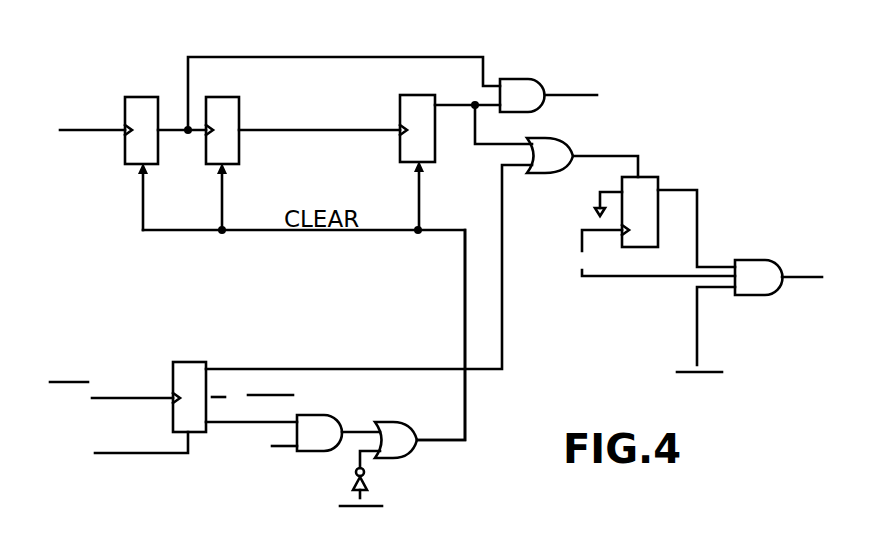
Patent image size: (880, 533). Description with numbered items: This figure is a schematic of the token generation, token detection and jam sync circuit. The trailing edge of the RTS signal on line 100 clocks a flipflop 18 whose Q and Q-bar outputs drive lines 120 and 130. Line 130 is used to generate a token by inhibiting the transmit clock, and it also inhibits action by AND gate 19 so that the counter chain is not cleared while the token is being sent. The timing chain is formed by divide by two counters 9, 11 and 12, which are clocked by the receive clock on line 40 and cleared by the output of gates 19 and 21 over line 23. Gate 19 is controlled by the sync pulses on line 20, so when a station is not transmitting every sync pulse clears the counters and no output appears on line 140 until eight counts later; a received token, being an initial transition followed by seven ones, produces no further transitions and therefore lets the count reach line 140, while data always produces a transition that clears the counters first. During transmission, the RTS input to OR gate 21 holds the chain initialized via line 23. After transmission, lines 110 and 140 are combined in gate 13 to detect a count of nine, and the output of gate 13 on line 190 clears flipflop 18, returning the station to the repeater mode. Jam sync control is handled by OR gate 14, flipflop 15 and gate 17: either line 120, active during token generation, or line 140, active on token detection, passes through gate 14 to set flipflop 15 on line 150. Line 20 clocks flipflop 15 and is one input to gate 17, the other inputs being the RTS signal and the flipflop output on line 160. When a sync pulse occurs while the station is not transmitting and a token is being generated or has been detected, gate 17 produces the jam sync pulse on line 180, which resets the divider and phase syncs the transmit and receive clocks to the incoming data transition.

The divide by two counter 9 is at (137, 96).
The divide by two counter 11 is at (230, 96).
The divide by two counter 12 is at (410, 94).
The gate 13 is at (526, 78).
The OR gate 14 is at (548, 174).
The flipflop 15 is at (653, 177).
The gate 17 is at (763, 297).
The flipflop 18 is at (187, 360).
The AND gate 19 is at (332, 415).
The OR gate 21 is at (408, 453).
The line 23 is at (465, 314).
The line 40 is at (82, 134).
The line 100 is at (697, 345).
The line 110 is at (338, 56).
The line 120 is at (502, 191).
The line 130 is at (235, 417).
The line 140 is at (453, 103).
The line 150 is at (600, 155).
The line 160 is at (698, 223).
The line 180 is at (800, 272).
The line 190 is at (588, 97).
The line 20 is at (645, 279).